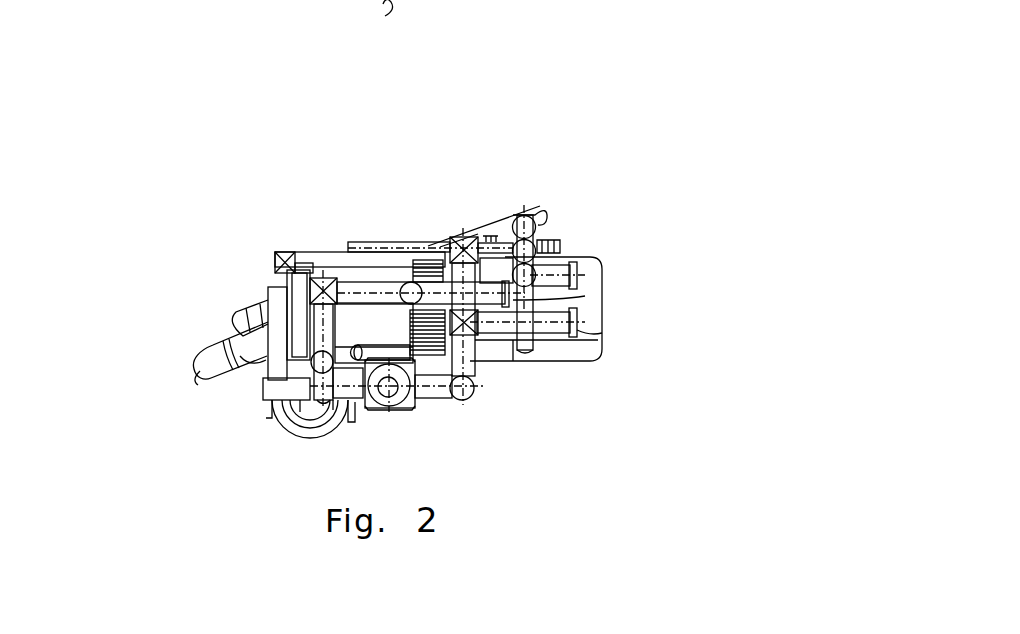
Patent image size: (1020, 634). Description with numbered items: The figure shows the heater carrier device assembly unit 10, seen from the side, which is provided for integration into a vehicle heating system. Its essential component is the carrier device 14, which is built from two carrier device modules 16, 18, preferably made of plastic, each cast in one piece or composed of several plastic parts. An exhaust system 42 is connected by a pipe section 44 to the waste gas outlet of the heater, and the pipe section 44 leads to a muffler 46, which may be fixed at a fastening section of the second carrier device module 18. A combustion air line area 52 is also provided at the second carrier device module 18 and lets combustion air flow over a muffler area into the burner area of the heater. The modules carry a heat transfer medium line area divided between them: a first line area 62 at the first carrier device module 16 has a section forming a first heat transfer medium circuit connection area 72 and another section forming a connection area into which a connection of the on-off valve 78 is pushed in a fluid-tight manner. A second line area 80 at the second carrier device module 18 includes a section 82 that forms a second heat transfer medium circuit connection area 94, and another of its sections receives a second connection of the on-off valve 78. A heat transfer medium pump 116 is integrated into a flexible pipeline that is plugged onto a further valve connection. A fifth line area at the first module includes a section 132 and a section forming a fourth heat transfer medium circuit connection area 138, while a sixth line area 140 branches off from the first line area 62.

The heater carrier device assembly unit 10 is at (706, 40).
The carrier device 14 is at (486, 198).
The first carrier device module 16 is at (590, 361).
The second carrier device module 18 is at (371, 248).
The exhaust system 42 is at (190, 382).
The pipe section 44 is at (207, 354).
The muffler 46 is at (246, 313).
The combustion air line area 52 is at (266, 290).
The first line area 62 is at (477, 372).
The first heat transfer medium circuit connection area 72 is at (576, 340).
The on-off valve 78 is at (388, 407).
The second line area 80 is at (348, 272).
The section 82 is at (432, 250).
The second heat transfer medium circuit connection area 94 is at (585, 296).
The heat transfer medium pump 116 is at (293, 437).
The section 132 is at (559, 264).
The fourth heat transfer medium circuit connection area 138 is at (580, 262).
The sixth line area 140 is at (537, 213).